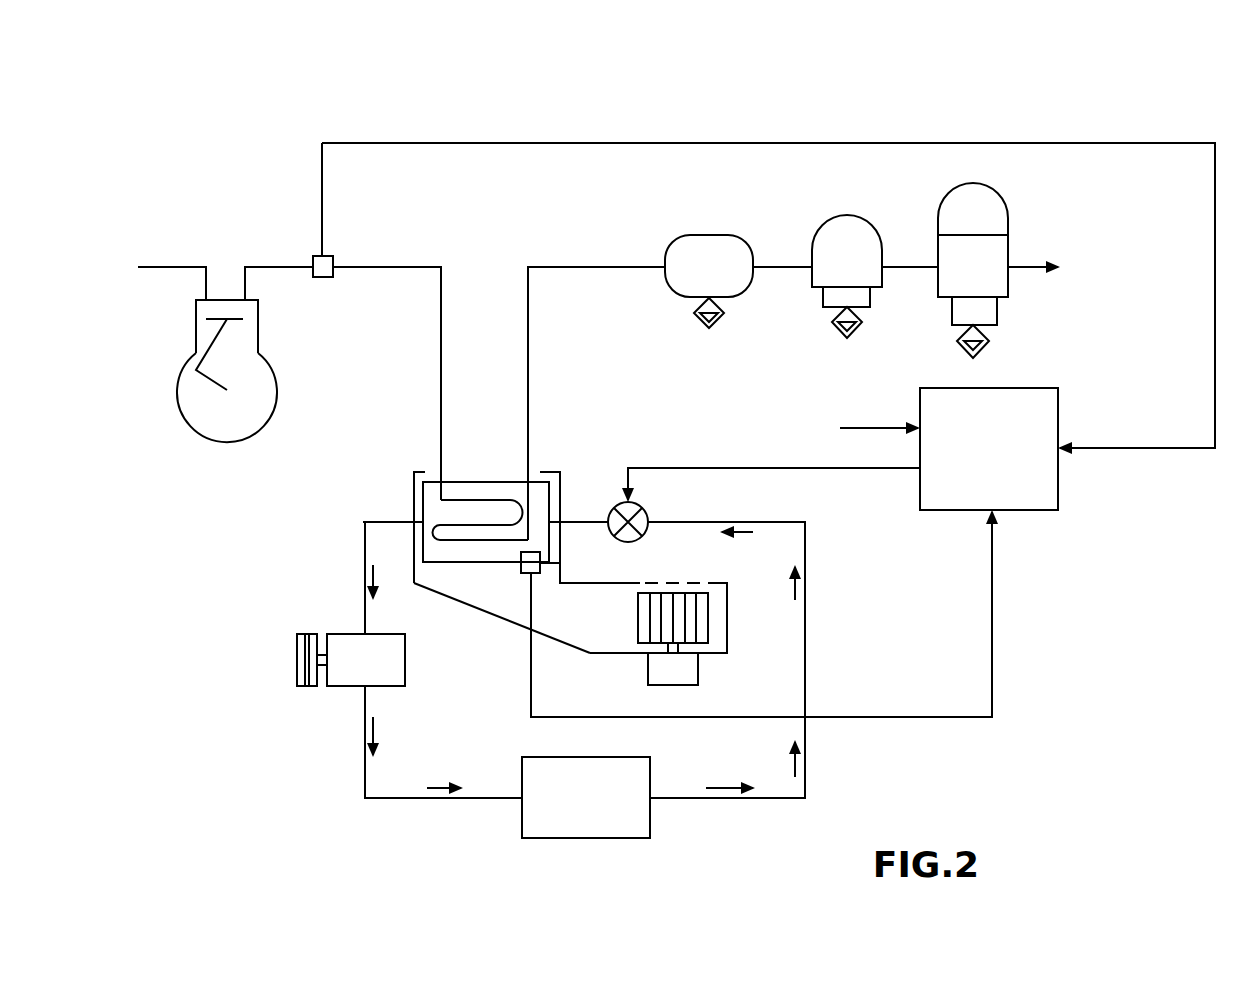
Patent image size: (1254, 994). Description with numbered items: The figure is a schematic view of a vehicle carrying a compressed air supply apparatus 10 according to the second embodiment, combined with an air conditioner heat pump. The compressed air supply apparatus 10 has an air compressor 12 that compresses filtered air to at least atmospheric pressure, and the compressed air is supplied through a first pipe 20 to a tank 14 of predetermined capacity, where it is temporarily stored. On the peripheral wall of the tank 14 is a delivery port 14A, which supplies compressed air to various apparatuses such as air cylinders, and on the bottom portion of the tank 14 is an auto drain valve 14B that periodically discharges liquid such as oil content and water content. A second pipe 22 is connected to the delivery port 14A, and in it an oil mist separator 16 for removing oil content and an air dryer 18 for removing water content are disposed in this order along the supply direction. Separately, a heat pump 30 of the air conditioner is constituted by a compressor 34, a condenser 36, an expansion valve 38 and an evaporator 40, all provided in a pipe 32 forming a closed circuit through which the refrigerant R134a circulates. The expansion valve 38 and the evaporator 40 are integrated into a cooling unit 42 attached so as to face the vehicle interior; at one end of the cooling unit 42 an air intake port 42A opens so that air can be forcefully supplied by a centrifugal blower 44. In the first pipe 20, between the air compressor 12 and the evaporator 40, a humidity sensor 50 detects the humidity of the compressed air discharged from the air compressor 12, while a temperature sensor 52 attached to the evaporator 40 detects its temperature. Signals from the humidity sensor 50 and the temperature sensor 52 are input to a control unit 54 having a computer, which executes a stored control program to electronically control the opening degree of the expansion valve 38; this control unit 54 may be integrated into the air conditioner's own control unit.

The compressed air supply apparatus 10 is at (667, 128).
The air compressor 12 is at (185, 360).
The tank 14 is at (698, 233).
The delivery port 14A is at (755, 268).
The auto drain valve 14B is at (693, 312).
The oil mist separator 16 is at (855, 212).
The air dryer 18 is at (1010, 205).
The first pipe 20 is at (375, 267).
The second pipe 22 is at (1050, 266).
The heat pump 30 is at (337, 805).
The pipe 32 is at (805, 687).
The compressor 34 is at (297, 637).
The condenser 36 is at (585, 838).
The expansion valve 38 is at (645, 512).
The evaporator 40 is at (472, 472).
The cooling unit 42 is at (486, 629).
The air intake port 42A is at (670, 582).
The centrifugal blower 44 is at (638, 620).
The humidity sensor 50 is at (313, 256).
The temperature sensor 52 is at (540, 565).
The control unit 54 is at (1040, 388).